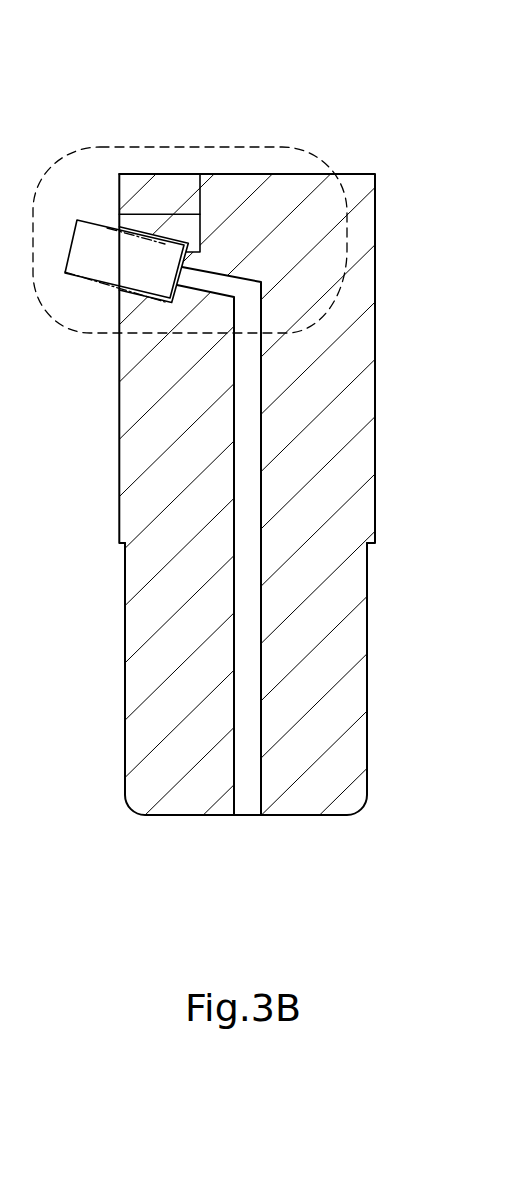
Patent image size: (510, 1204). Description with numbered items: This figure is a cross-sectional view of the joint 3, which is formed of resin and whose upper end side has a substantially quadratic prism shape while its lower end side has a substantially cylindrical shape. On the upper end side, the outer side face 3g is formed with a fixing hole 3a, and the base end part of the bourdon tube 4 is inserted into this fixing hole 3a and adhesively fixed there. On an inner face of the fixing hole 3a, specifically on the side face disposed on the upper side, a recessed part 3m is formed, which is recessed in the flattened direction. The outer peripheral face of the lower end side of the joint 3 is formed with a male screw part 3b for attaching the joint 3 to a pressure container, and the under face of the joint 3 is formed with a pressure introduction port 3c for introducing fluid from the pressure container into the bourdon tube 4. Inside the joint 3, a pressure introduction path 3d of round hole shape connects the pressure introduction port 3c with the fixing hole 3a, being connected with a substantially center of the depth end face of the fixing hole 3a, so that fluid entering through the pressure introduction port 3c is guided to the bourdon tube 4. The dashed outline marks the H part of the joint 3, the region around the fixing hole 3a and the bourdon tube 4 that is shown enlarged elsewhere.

The joint 3 is at (242, 539).
The fixing hole 3a is at (142, 262).
The male screw part 3b is at (368, 675).
The pressure introduction port 3c is at (243, 816).
The pressure introduction path 3d is at (252, 505).
The outer side face 3g is at (118, 456).
The recessed part 3m is at (150, 214).
The bourdon tube 4 is at (70, 275).
The H part H is at (250, 147).